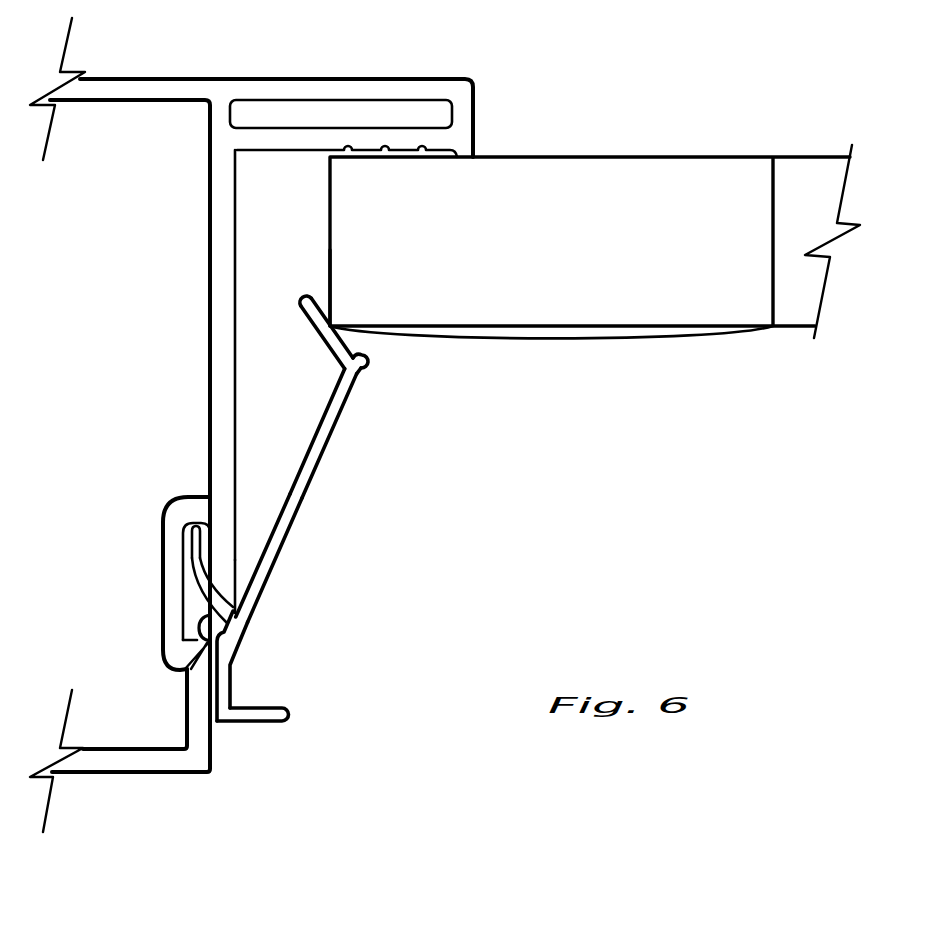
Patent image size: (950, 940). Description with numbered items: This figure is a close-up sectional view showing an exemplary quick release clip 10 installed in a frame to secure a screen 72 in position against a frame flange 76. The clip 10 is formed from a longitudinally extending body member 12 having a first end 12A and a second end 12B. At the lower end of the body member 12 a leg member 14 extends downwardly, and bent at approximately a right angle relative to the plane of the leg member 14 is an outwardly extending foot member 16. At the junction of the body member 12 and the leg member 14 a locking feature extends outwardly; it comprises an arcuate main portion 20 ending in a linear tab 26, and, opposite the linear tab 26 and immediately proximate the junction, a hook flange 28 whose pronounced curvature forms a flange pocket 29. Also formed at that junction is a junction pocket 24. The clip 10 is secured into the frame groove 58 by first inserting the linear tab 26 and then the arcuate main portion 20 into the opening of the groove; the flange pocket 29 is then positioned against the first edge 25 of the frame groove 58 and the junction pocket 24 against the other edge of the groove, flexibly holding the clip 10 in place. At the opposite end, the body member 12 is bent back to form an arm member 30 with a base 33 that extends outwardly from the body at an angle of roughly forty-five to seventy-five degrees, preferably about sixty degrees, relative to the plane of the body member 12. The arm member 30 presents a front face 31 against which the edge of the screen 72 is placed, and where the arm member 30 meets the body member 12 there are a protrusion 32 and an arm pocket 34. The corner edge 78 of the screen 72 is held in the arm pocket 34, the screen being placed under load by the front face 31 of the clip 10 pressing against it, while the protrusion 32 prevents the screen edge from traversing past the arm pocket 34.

The quick release clip 10 is at (335, 481).
The body member 12 is at (326, 498).
The first end 12A is at (245, 627).
The second end 12B is at (360, 377).
The leg member 14 is at (233, 680).
The foot member 16 is at (270, 705).
The arcuate main portion 20 is at (190, 578).
The junction pocket 24 is at (235, 610).
The first edge 25 is at (212, 722).
The linear tab 26 is at (183, 530).
The hook flange 28 is at (193, 645).
The flange pocket 29 is at (186, 663).
The arm member 30 is at (342, 328).
The front face 31 is at (306, 292).
The protrusion 32 is at (367, 357).
The base 33 is at (350, 328).
The arm pocket 34 is at (364, 352).
The frame groove 58 is at (193, 594).
The screen 72 is at (726, 165).
The frame flange 76 is at (477, 130).
The corner edge 78 is at (327, 292).